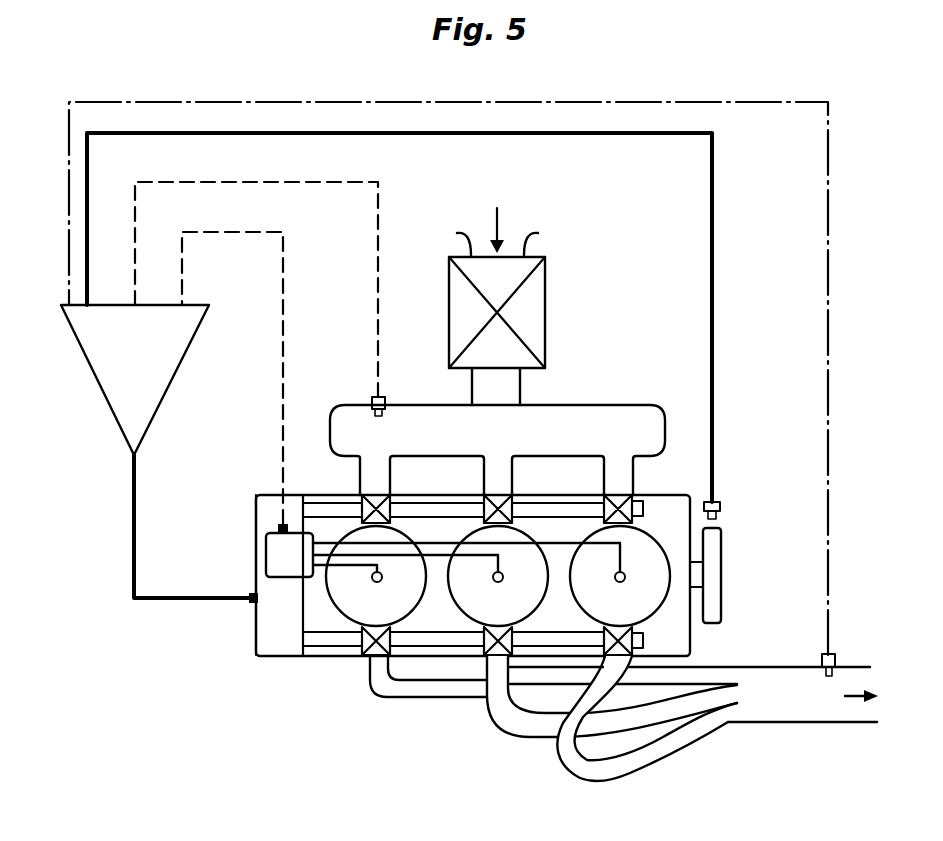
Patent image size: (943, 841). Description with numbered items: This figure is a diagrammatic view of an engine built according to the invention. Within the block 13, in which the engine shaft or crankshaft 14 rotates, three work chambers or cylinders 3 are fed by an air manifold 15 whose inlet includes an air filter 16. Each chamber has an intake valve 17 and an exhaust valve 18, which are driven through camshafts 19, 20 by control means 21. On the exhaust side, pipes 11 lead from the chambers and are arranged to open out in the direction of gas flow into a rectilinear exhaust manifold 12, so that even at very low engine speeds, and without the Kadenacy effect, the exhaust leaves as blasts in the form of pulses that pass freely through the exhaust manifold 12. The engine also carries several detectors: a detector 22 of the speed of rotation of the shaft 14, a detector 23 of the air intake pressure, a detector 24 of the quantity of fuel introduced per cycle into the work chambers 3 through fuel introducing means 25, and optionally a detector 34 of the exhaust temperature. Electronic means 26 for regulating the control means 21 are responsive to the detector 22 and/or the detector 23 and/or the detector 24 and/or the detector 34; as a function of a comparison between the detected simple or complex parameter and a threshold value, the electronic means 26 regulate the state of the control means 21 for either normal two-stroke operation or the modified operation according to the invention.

The work chambers or cylinders 3 is at (352, 600).
The pipes 11 is at (440, 688).
The exhaust manifold 12 is at (788, 677).
The block 13 is at (682, 627).
The engine shaft or crankshaft 14 is at (715, 552).
The air manifold 15 is at (602, 416).
The air filter 16 is at (541, 306).
The intake valve 17 is at (375, 497).
The exhaust valve 18 is at (360, 648).
The camshaft 19 is at (575, 507).
The camshaft 20 is at (422, 641).
The control means 21 is at (258, 633).
The detector of the speed of rotation 22 is at (720, 504).
The detector of the air intake pressure 23 is at (386, 398).
The detector of the quantity of fuel 24 is at (277, 528).
The fuel introducing means 25 is at (276, 560).
The electronic means 26 is at (107, 385).
The detector of the exhaust temperature 34 is at (833, 655).